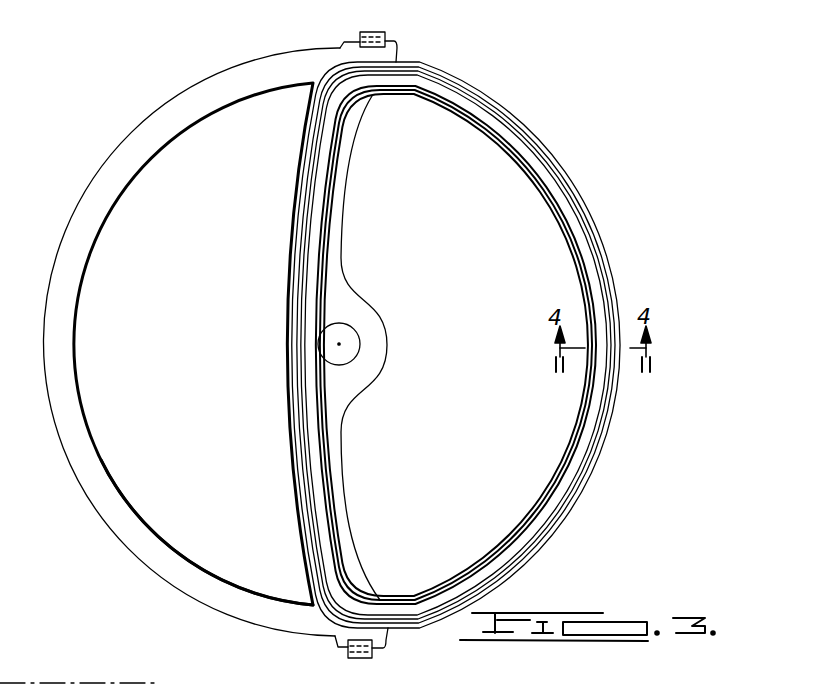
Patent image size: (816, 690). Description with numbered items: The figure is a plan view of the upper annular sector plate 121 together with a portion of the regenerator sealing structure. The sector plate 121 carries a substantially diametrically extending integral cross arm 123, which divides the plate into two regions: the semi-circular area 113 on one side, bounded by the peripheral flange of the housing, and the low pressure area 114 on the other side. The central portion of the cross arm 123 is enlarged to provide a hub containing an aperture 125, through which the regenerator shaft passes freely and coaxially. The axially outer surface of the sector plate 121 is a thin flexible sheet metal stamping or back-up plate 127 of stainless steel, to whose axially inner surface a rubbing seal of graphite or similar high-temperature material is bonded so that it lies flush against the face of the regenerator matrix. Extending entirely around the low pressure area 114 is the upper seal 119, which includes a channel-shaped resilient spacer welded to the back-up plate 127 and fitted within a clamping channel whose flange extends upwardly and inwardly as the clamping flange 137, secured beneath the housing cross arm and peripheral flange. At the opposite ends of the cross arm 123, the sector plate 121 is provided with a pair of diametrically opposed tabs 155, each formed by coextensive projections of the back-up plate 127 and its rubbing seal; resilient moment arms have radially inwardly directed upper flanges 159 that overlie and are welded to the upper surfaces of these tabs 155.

The area 113 is at (251, 369).
The area 114 is at (482, 348).
The upper seal 119 is at (545, 136).
The upper annular sector plate 121 is at (85, 239).
The cross arm 123 is at (342, 243).
The aperture 125 is at (341, 324).
The back-up plate 127 is at (203, 588).
The clamping flange 137 is at (125, 688).
The tab 155 is at (347, 42).
The upper flange 159 is at (396, 43).